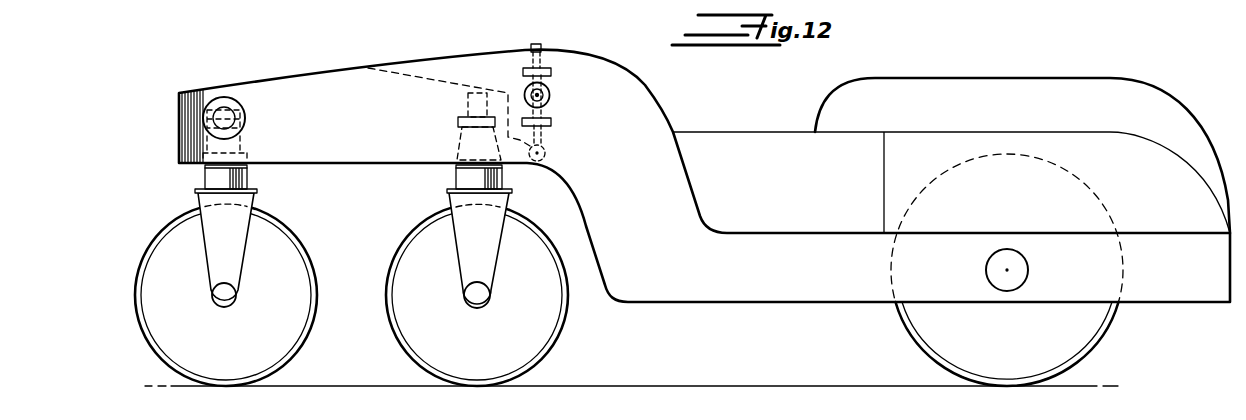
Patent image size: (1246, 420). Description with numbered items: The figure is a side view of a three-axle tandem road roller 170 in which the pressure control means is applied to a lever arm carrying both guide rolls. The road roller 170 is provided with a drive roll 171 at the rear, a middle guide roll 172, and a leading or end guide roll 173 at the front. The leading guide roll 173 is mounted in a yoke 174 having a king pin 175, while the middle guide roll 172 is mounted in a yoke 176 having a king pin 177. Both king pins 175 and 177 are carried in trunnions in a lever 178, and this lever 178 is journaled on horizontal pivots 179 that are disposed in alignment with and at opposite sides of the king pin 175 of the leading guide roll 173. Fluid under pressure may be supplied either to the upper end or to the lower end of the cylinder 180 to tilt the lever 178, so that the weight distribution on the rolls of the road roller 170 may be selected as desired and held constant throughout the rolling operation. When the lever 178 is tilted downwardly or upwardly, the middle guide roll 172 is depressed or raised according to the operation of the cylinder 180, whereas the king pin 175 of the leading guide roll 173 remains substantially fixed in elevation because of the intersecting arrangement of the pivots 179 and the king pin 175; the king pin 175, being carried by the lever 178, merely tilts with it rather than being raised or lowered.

The road roller 170 is at (589, 70).
The drive roll 171 is at (1085, 341).
The middle guide roll 172 is at (547, 332).
The leading guide roll 173 is at (293, 336).
The yoke 174 is at (216, 257).
The king pin 175 is at (226, 89).
The yoke 176 is at (473, 268).
The king pin 177 is at (471, 105).
The lever 178 is at (414, 72).
The horizontal pivots 179 is at (240, 112).
The cylinder 180 is at (548, 84).